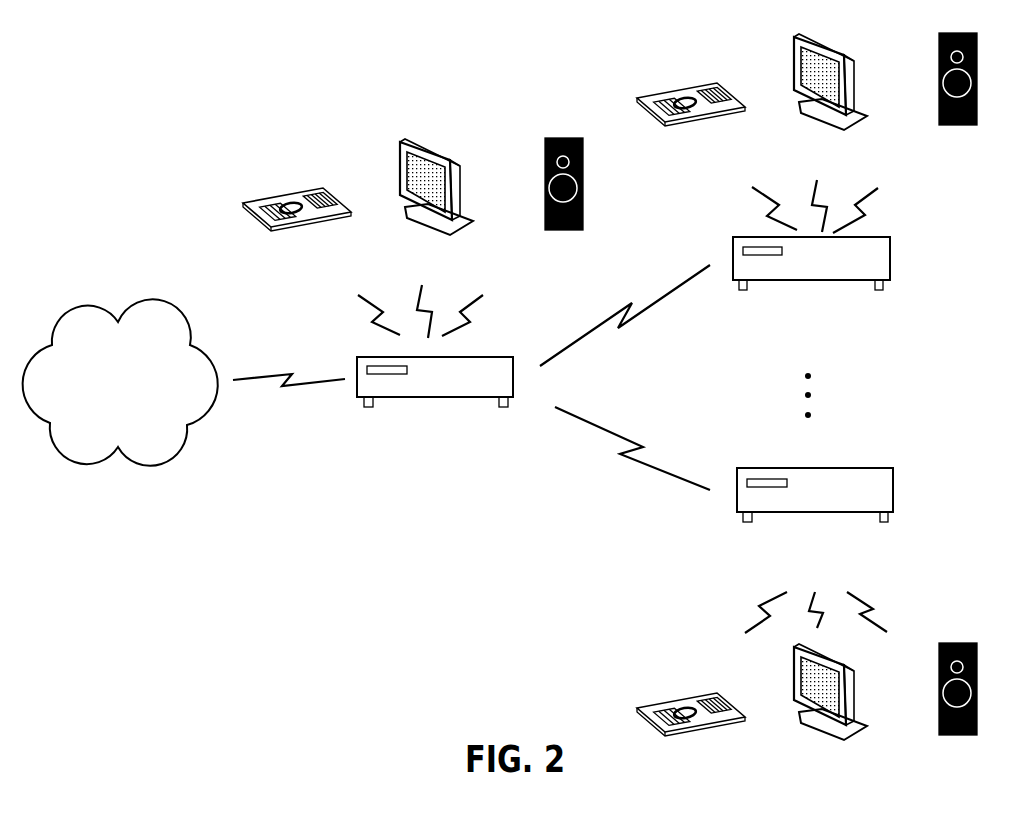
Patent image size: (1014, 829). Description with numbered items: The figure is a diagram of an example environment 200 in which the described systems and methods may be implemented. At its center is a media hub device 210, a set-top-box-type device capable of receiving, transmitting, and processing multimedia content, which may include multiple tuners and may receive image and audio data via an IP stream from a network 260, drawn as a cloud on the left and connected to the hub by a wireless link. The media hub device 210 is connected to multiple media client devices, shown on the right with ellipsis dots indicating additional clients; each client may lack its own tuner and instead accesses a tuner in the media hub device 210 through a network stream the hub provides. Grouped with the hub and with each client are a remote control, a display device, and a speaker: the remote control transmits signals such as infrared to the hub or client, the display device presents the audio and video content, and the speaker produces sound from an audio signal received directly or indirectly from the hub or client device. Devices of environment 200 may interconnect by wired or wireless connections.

The environment 200 is at (96, 38).
The media hub device 210 is at (435, 410).
The network 260 is at (120, 382).